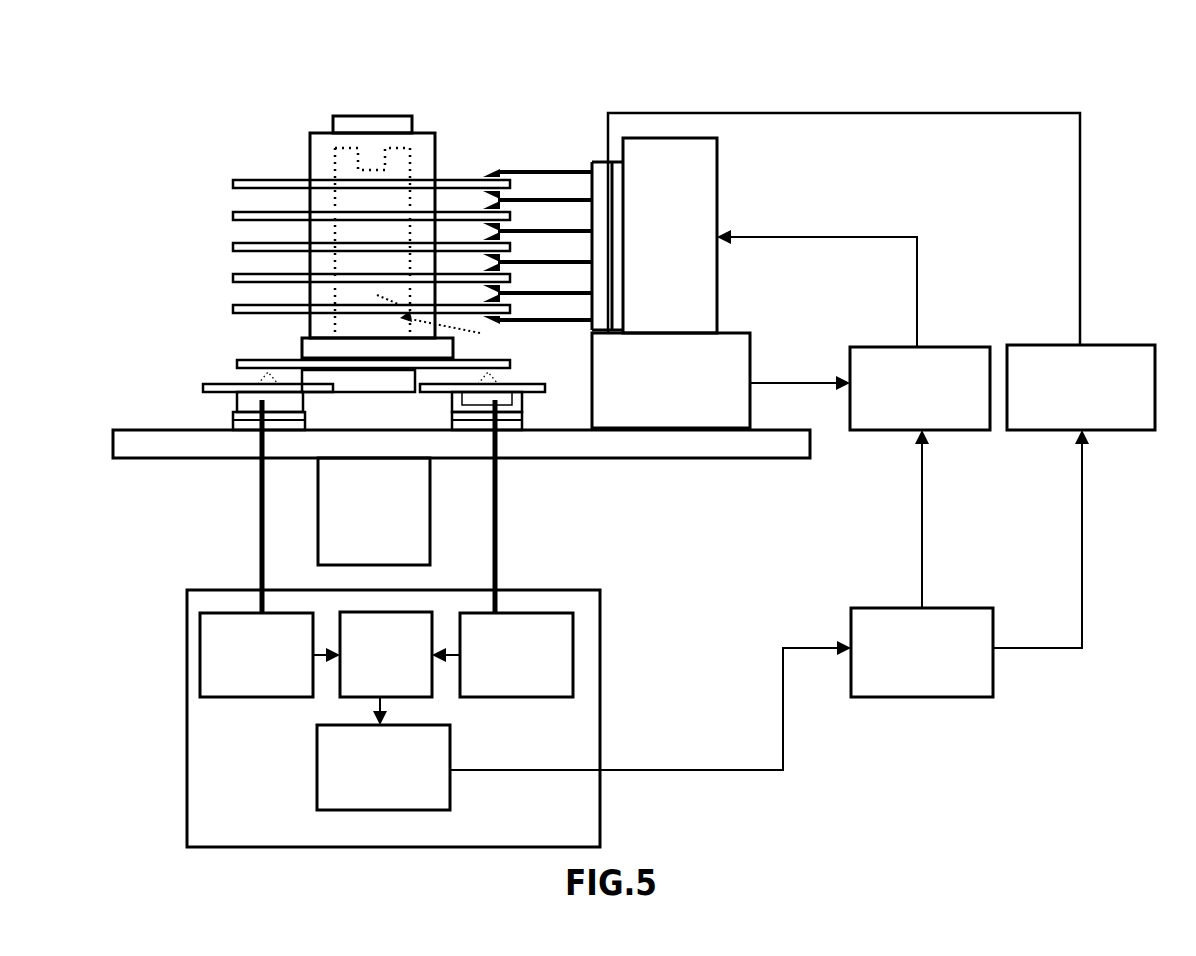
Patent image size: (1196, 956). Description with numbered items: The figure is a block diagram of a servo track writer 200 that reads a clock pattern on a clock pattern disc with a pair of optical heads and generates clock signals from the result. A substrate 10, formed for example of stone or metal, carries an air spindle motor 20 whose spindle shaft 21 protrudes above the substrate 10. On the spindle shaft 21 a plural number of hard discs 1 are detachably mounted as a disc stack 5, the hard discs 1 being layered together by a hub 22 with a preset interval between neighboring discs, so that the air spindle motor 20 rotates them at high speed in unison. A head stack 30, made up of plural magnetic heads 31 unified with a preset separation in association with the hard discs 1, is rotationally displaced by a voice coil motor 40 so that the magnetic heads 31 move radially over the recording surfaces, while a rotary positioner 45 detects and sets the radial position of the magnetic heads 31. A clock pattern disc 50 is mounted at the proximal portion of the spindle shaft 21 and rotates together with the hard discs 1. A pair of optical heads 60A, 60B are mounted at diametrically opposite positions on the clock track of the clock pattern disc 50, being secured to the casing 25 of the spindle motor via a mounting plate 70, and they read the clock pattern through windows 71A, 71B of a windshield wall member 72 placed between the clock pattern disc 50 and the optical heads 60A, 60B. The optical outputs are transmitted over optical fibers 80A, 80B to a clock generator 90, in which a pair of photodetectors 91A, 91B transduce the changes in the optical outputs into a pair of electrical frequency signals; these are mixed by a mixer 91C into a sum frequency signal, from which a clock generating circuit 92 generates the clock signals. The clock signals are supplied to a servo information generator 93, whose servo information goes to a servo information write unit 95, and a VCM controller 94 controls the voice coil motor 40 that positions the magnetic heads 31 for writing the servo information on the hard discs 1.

The servo track writer 200 is at (190, 90).
The disc stack 5 is at (150, 165).
The hard disc 1 is at (233, 184).
The head stack 30 is at (585, 92).
The magnetic head 31 is at (490, 172).
The hub 22 is at (315, 160).
The spindle shaft 21 is at (445, 319).
The casing 25 is at (322, 405).
The clock pattern disc 50 is at (237, 362).
The window 71B is at (233, 377).
The window 71A is at (512, 380).
The optical head 60B is at (283, 400).
The optical head 60A is at (478, 400).
The mounting plate 70 is at (512, 405).
The windshield wall member 72 is at (548, 390).
The substrate 10 is at (170, 455).
The air spindle motor 20 is at (420, 532).
The optical fiber 80B is at (255, 500).
The optical fiber 80A is at (497, 540).
The voice coil motor 40 is at (705, 220).
The rotary positioner 45 is at (740, 360).
The VCM controller 94 is at (935, 425).
The servo information write unit 95 is at (1058, 348).
The servo information generator 93 is at (920, 696).
The clock generator 90 is at (438, 718).
The photodetector 91B is at (262, 685).
The mixer 91C is at (405, 683).
The photodetector 91A is at (535, 687).
The clock generating circuit 92 is at (318, 773).